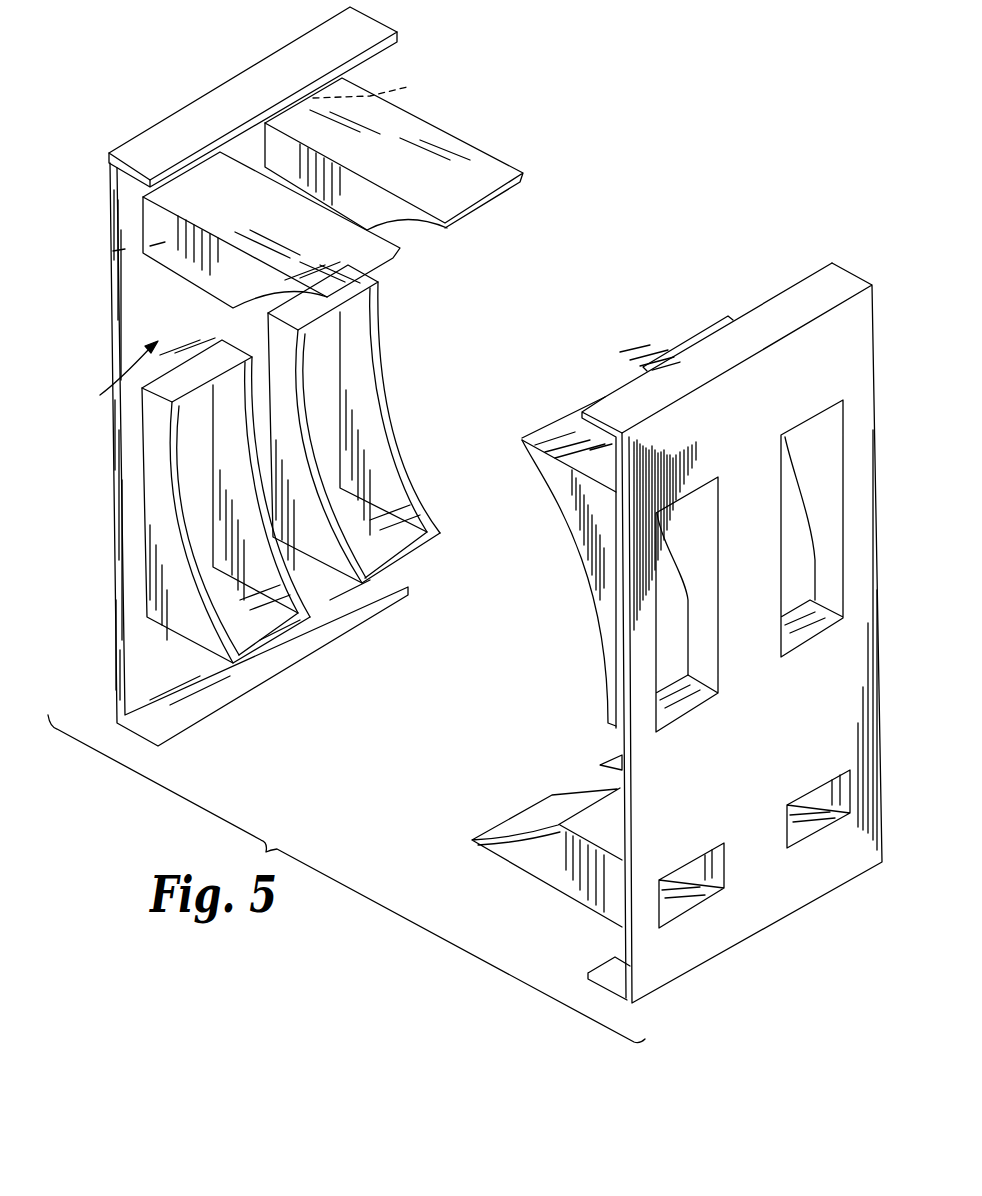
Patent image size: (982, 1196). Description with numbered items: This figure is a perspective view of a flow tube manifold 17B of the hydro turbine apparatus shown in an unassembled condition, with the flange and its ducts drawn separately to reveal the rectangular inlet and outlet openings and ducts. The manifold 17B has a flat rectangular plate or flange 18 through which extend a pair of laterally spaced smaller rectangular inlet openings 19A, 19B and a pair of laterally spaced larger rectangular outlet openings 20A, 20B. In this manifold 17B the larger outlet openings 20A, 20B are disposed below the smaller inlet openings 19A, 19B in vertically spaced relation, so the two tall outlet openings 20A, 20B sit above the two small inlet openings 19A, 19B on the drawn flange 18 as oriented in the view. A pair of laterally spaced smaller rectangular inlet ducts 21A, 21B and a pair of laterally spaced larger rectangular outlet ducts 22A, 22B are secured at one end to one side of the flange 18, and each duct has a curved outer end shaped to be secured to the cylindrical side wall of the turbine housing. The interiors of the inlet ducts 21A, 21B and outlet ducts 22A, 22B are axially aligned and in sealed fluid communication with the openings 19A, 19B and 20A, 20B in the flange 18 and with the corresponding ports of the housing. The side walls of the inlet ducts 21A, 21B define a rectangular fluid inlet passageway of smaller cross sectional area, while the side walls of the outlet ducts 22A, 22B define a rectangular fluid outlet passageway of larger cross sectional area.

The flow tube manifold 17B is at (103, 376).
The flange 18 is at (130, 437).
The inlet opening 19A is at (110, 257).
The inlet opening 19B is at (820, 848).
The outlet opening 20A is at (180, 495).
The outlet opening 20B is at (330, 377).
The inlet duct 21A is at (278, 224).
The inlet duct 21B is at (418, 161).
The outlet duct 22A is at (153, 600).
The outlet duct 22B is at (380, 443).